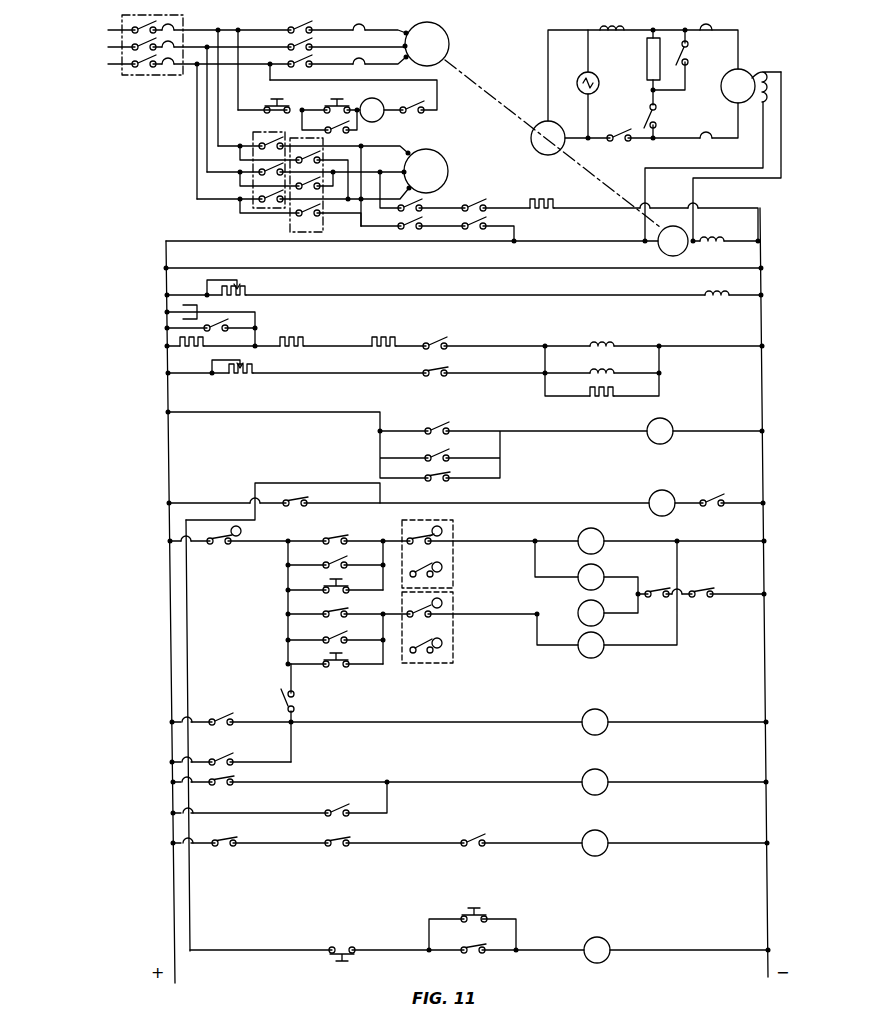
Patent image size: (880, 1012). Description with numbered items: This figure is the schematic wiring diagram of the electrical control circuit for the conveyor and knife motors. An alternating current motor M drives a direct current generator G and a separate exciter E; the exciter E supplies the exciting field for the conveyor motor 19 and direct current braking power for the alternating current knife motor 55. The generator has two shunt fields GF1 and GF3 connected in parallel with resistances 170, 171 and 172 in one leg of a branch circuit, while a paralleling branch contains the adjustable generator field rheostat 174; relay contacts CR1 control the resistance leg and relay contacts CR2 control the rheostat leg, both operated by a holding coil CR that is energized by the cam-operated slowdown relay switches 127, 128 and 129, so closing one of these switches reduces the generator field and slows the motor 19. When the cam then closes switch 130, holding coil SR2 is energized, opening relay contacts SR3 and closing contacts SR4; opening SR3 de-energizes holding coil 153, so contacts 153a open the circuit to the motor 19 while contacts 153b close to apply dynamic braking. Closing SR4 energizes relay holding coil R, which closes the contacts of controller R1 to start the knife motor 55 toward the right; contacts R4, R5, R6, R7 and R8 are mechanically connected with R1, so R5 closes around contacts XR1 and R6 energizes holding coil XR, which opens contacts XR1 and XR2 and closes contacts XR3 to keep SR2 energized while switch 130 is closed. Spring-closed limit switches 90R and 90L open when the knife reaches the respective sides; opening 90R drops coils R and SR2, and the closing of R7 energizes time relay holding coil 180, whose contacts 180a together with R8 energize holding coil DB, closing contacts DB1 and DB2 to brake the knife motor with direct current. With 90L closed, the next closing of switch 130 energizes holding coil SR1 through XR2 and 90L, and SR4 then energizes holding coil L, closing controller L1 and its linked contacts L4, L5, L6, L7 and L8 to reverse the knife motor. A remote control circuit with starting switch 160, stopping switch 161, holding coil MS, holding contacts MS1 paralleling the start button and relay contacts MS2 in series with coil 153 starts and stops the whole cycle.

The conveyor motor 19 is at (752, 72).
The knife motor 55 is at (432, 150).
The contacts 153a is at (618, 143).
The contacts 153b is at (656, 118).
The holding coil 153 is at (650, 494).
The resistance 170 is at (180, 346).
The resistance 171 is at (292, 336).
The resistance 172 is at (384, 336).
The generator field rheostat 174 is at (246, 380).
The slowdown relay switch 127 is at (440, 424).
The slowdown relay switch 128 is at (436, 451).
The slowdown relay switch 129 is at (428, 482).
The switch 130 is at (216, 547).
The limit switch 90R is at (453, 528).
The limit switch 90L is at (453, 600).
The starting switch 160 is at (462, 910).
The stopping switch 161 is at (352, 933).
The time relay holding coil 180 is at (604, 770).
The relay contacts 180a is at (478, 836).
The alternating current motor M is at (444, 30).
The direct current generator G is at (531, 138).
The exciter E is at (684, 228).
The controller L1 is at (258, 134).
The controller R1 is at (288, 228).
The contacts R4 is at (428, 205).
The contacts L4 is at (410, 232).
The contacts DB1 is at (478, 201).
The contacts DB2 is at (474, 232).
The holding coil CR is at (668, 420).
The relay contacts CR1 is at (440, 336).
The relay contacts CR2 is at (440, 366).
The generator shunt field GF1 is at (605, 338).
The generator shunt field GF3 is at (586, 362).
The holding coil MS is at (606, 938).
The holding contacts MS1 is at (470, 942).
The relay contacts MS2 is at (300, 496).
The holding coil SR1 is at (600, 656).
The holding coil SR2 is at (602, 530).
The relay contacts SR3 is at (712, 496).
The relay contacts SR4 is at (705, 585).
The relay holding coil R is at (600, 566).
The holding coil L is at (580, 601).
The holding coil XR is at (604, 710).
The contacts XR1 is at (330, 530).
The contacts XR2 is at (340, 606).
The contacts XR3 is at (294, 701).
The contacts R5 is at (322, 556).
The relay contacts R6 is at (230, 712).
The relay contacts R7 is at (222, 786).
The relay contacts R8 is at (345, 836).
The relay contacts L5 is at (322, 632).
The relay contacts L6 is at (208, 755).
The contacts L7 is at (326, 805).
The contacts L8 is at (228, 836).
The holding coil DB is at (604, 831).